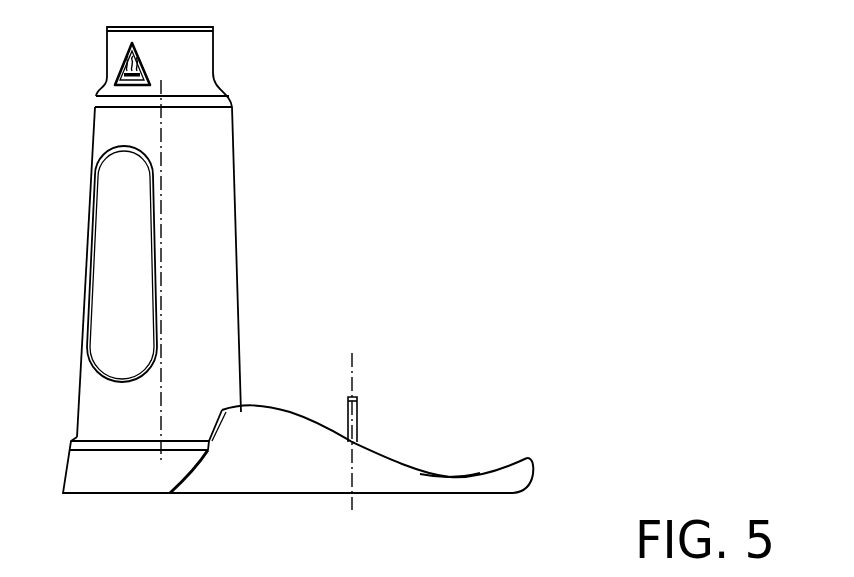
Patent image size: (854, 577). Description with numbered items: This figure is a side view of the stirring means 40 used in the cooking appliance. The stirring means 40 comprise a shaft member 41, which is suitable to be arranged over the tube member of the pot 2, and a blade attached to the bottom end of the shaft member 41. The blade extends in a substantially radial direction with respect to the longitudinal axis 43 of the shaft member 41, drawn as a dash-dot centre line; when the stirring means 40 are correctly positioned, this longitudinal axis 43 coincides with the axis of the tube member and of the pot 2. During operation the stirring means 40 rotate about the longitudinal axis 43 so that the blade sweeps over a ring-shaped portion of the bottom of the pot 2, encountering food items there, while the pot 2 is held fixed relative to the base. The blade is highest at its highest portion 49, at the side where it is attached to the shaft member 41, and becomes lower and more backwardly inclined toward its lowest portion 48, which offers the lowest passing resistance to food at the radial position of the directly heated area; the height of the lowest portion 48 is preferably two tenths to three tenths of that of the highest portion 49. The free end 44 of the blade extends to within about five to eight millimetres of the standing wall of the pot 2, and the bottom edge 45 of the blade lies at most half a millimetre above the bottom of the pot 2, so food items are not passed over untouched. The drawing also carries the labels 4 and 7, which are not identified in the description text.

The stirring means 40 is at (200, 57).
The longitudinal axis 43 is at (190, 145).
The shaft member 41 is at (224, 272).
The highest portion 49 is at (233, 418).
The base upper surface 4 is at (310, 438).
The pot 2 is at (342, 430).
The pin 7 is at (376, 396).
The lowest portion 48 is at (458, 476).
The free end 44 is at (522, 458).
The bottom edge 45 is at (399, 493).